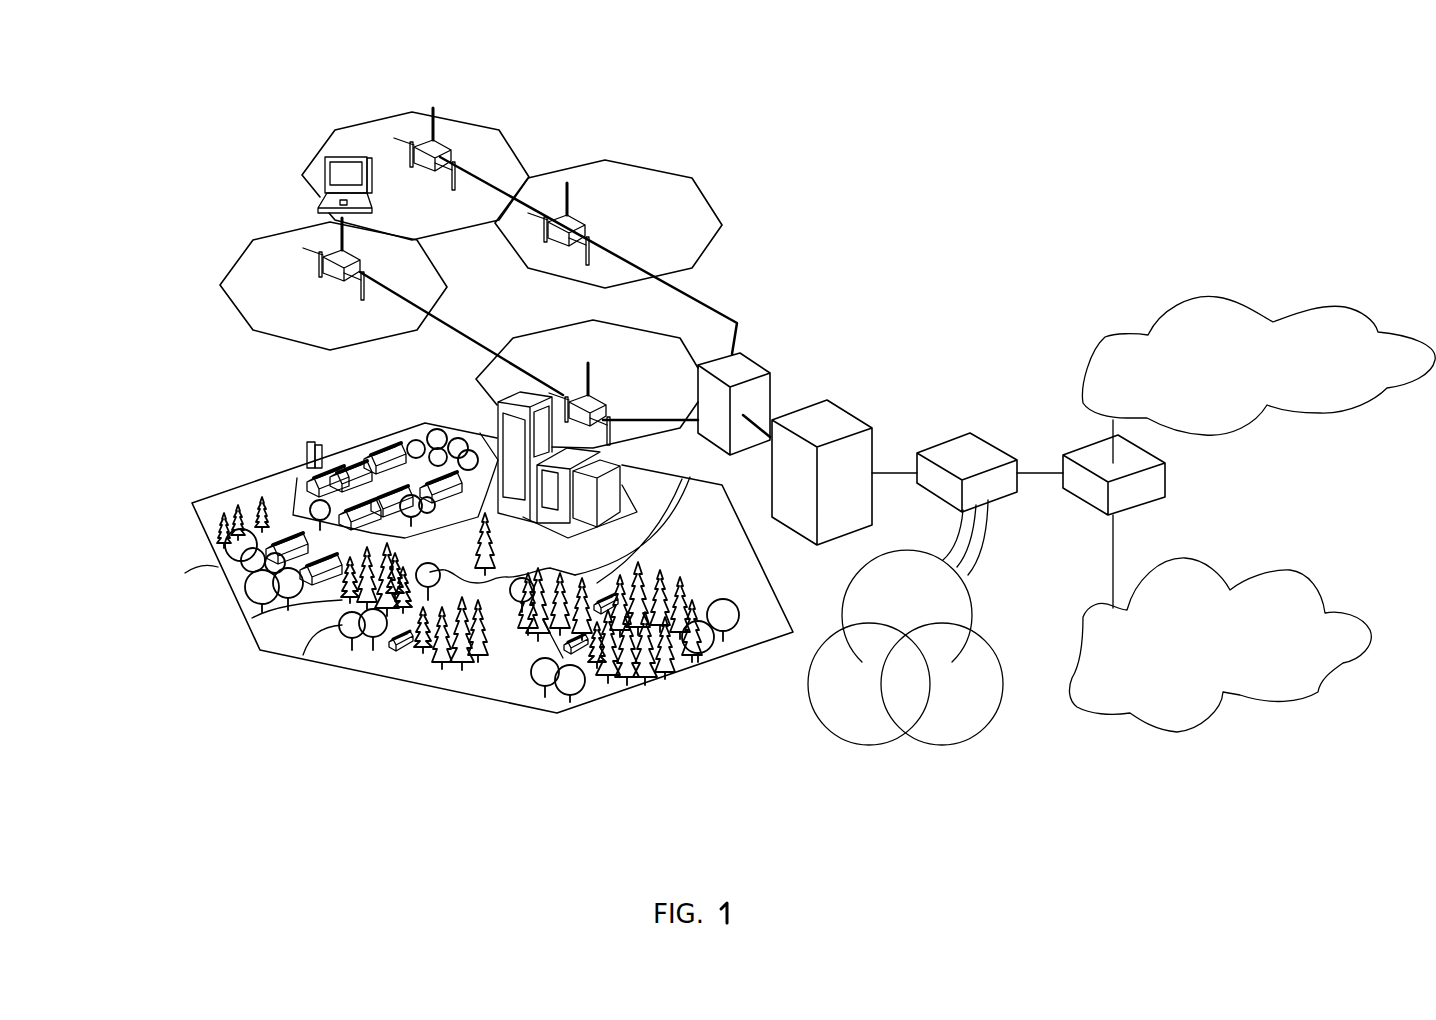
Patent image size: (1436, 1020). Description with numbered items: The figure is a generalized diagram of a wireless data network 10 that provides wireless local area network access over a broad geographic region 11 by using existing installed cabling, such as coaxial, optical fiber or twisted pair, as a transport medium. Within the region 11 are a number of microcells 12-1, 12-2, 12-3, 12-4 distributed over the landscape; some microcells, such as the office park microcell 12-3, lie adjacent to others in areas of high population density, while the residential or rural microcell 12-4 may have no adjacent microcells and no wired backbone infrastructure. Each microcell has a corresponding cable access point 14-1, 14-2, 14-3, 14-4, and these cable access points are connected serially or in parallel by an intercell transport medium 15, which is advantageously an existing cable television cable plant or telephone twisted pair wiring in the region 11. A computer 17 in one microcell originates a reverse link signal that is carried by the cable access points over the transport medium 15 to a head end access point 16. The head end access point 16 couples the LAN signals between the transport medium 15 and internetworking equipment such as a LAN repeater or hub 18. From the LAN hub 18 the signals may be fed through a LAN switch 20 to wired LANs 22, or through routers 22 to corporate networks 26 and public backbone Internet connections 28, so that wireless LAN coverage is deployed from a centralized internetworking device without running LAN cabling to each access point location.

The wireless data network 10 is at (583, 64).
The geographic region 11 is at (433, 690).
The microcell 12-1 is at (250, 273).
The microcell 12-2 is at (363, 122).
The microcell 12-3 is at (682, 170).
The microcell 12-4 is at (600, 318).
The cable access point 14-1 is at (338, 283).
The cable access point 14-2 is at (447, 142).
The cable access point 14-3 is at (557, 207).
The cable access point 14-4 is at (610, 400).
The intercell transport medium 15 is at (702, 302).
The head end access point 16 is at (743, 370).
The computer 17 is at (322, 175).
The LAN repeater or hub 18 is at (833, 413).
The LAN switch 20 is at (960, 443).
The wired LANs / router 22 is at (892, 690).
The corporate networks 26 is at (1233, 688).
The public backbone Internet connections 28 is at (1268, 398).